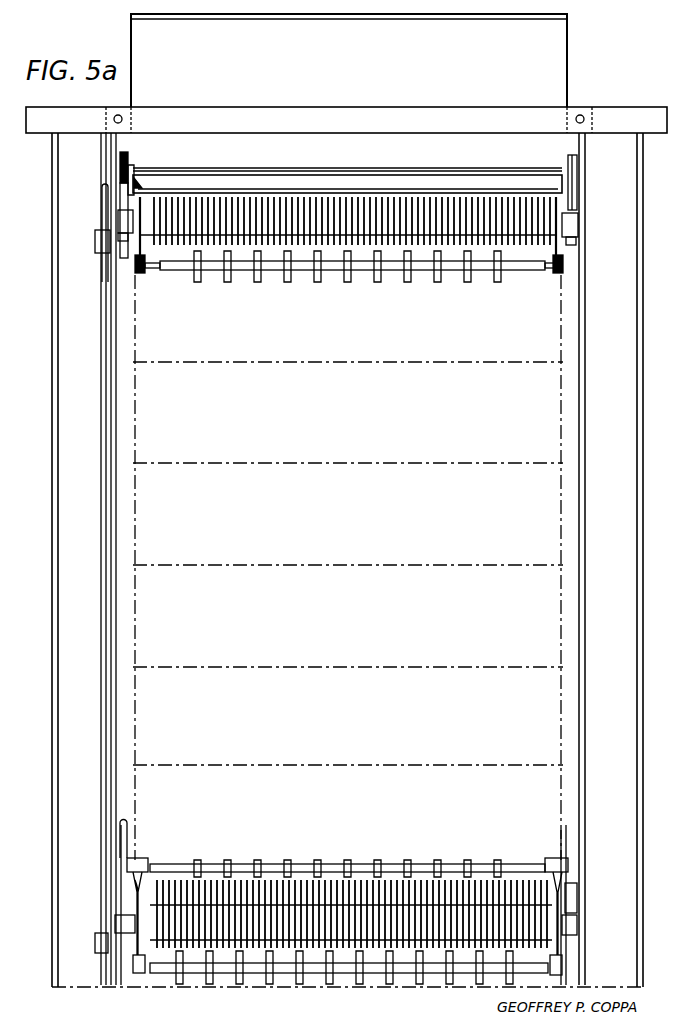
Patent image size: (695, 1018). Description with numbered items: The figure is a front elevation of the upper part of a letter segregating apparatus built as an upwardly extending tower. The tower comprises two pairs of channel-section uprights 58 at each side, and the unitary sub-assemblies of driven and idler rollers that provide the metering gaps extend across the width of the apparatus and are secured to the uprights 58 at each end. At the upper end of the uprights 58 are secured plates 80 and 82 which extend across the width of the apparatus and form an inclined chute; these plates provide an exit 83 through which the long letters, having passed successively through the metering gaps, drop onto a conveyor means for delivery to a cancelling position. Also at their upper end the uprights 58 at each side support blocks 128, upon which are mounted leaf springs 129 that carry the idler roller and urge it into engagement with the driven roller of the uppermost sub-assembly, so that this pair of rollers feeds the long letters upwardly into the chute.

The channel-section uprights 58 is at (76, 558).
The plate 80 is at (547, 68).
The plate 82 is at (122, 177).
The exit 83 is at (545, 186).
The blocks 128 is at (120, 221).
The leaf springs 129 is at (121, 164).